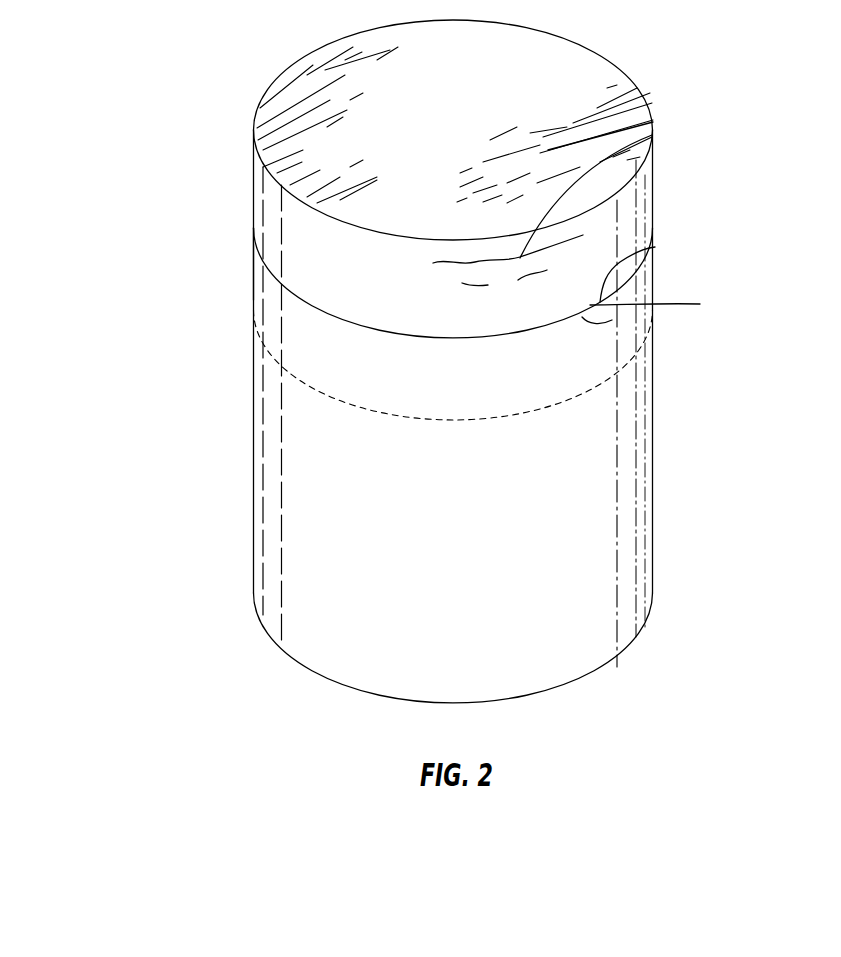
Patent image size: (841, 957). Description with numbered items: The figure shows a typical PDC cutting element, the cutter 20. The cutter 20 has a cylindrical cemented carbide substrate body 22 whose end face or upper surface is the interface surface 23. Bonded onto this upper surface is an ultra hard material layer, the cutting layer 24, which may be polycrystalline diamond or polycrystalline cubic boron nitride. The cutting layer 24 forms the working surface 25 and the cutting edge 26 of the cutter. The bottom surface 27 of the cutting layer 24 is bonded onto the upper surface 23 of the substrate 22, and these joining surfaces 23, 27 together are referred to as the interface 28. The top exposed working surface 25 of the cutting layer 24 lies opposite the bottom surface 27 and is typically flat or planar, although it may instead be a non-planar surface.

The cutter 20 is at (391, 361).
The cylindrical cemented carbide substrate body 22 is at (610, 356).
The interface surface 23 is at (655, 247).
The ultra hard material layer 24 is at (635, 210).
The working surface 25 is at (600, 83).
The cutting edge 26 is at (300, 82).
The bottom surface 27 is at (497, 283).
The interface 28 is at (256, 262).